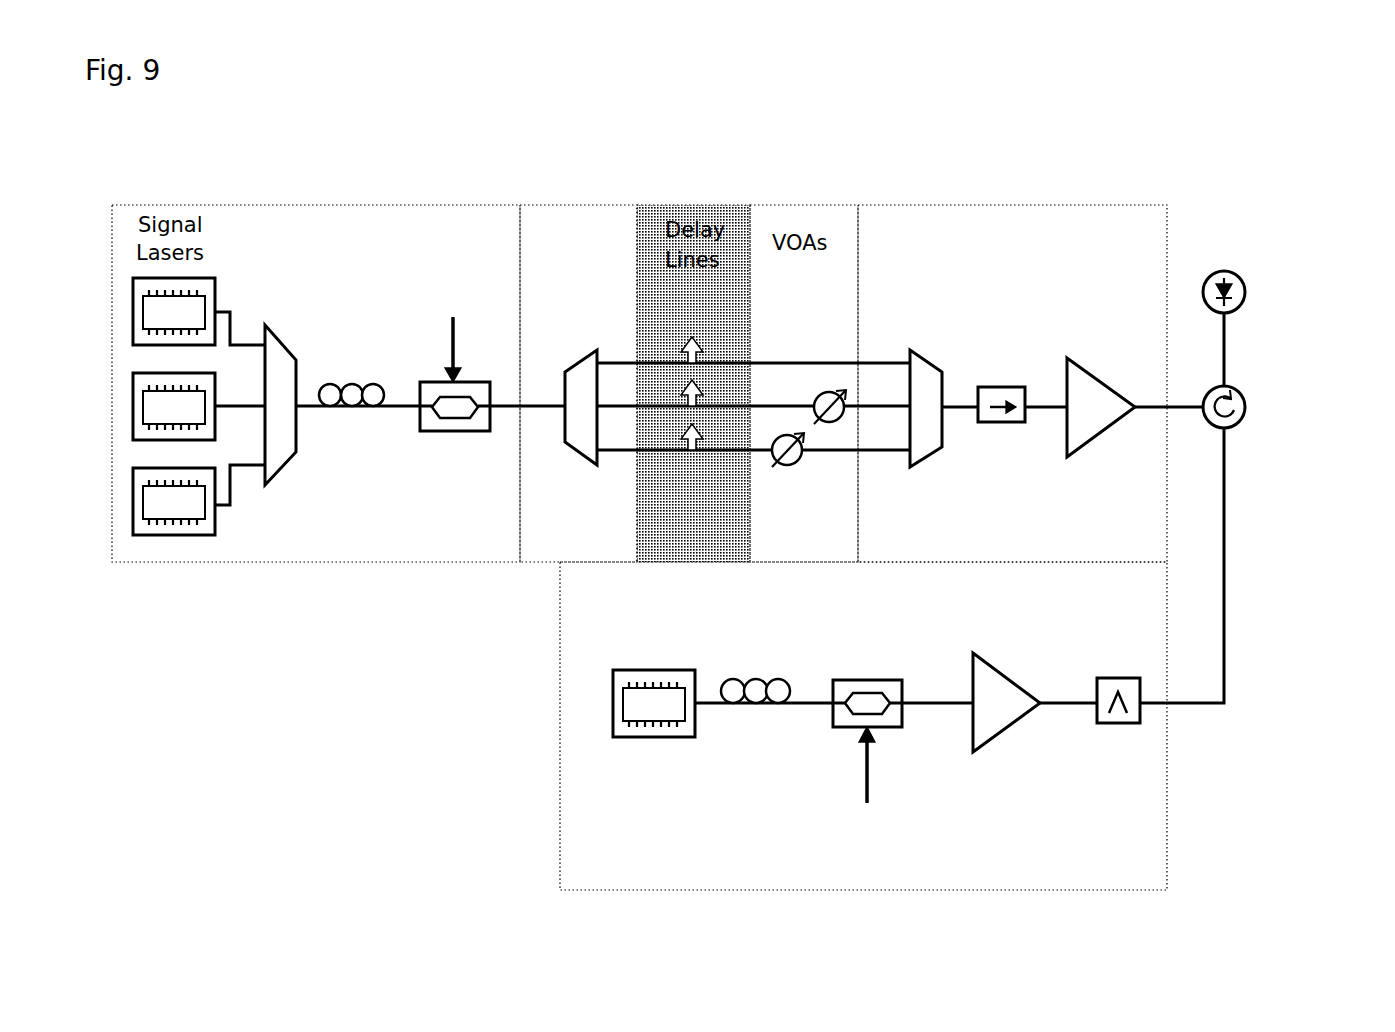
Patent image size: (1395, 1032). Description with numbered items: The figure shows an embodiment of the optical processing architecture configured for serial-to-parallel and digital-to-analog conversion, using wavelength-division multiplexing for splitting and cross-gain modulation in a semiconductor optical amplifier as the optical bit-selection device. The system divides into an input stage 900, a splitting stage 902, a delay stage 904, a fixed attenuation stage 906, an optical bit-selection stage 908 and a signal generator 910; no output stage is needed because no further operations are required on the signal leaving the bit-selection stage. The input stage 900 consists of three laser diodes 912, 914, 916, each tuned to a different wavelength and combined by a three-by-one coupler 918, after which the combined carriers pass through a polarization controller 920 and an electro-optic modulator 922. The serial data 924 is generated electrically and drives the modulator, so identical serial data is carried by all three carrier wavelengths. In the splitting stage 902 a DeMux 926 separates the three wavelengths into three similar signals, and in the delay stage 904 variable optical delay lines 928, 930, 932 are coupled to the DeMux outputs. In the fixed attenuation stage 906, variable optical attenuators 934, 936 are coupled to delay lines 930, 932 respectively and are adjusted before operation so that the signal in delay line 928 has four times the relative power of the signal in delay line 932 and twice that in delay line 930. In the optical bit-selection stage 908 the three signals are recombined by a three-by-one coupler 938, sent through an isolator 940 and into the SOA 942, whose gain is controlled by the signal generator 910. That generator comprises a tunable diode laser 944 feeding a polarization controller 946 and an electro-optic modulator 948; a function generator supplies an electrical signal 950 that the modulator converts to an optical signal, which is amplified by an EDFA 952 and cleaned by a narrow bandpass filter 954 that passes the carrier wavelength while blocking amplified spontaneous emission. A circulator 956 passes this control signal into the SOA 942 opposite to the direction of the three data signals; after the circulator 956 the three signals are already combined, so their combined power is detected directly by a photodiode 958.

The input stage 900 is at (437, 204).
The splitting stage 902 is at (547, 204).
The delay stage 904 is at (700, 204).
The fixed attenuation stage 906 is at (802, 204).
The optical bit-selection stage 908 is at (1120, 204).
The signal generator 910 is at (556, 810).
The laser diode 912 is at (170, 541).
The laser diode 914 is at (133, 446).
The laser diode 916 is at (217, 277).
The 3×1 coupler 918 is at (275, 330).
The polarization controller 920 is at (350, 380).
The electro-optic modulator 922 is at (421, 428).
The serial data 924 is at (445, 338).
The DeMux 926 is at (583, 352).
The variable optical delay line 928 is at (684, 334).
The variable optical delay line 930 is at (705, 387).
The variable optical delay line 932 is at (688, 461).
The variable optical attenuator 934 is at (818, 383).
The variable optical attenuator 936 is at (797, 474).
The 3×1 coupler 938 is at (923, 348).
The isolator 940 is at (1005, 382).
The SOA 942 is at (1075, 356).
The tunable diode laser 944 is at (609, 698).
The polarization controller 946 is at (756, 677).
The electro-optic modulator 948 is at (908, 734).
The electrical signal 950 is at (861, 773).
The EDFA 952 is at (996, 744).
The narrow bandpass filter 954 is at (1122, 733).
The circulator 956 is at (1238, 431).
The photodiode 958 is at (1231, 268).